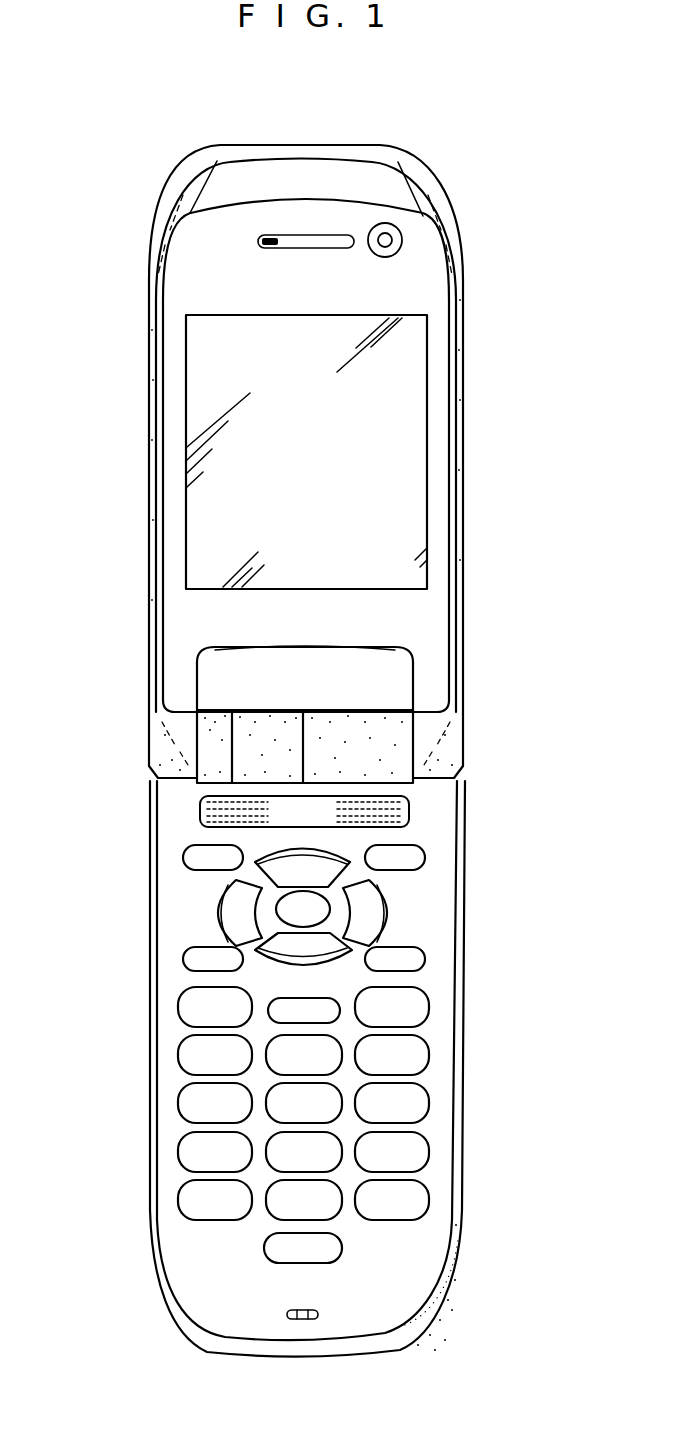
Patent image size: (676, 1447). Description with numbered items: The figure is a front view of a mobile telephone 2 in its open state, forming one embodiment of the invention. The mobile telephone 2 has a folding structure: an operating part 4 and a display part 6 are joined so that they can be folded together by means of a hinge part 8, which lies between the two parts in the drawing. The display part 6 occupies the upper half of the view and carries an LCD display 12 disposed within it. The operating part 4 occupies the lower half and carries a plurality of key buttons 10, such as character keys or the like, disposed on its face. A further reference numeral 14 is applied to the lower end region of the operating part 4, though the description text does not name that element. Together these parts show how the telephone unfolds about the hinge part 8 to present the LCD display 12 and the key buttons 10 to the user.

The mobile telephone 2 is at (321, 751).
The operating part 4 is at (307, 1069).
The display part 6 is at (298, 461).
The hinge part 8 is at (400, 752).
The key buttons 10 is at (128, 829).
The LCD display 12 is at (186, 485).
The lower end portion of lower housing 14 is at (448, 1312).